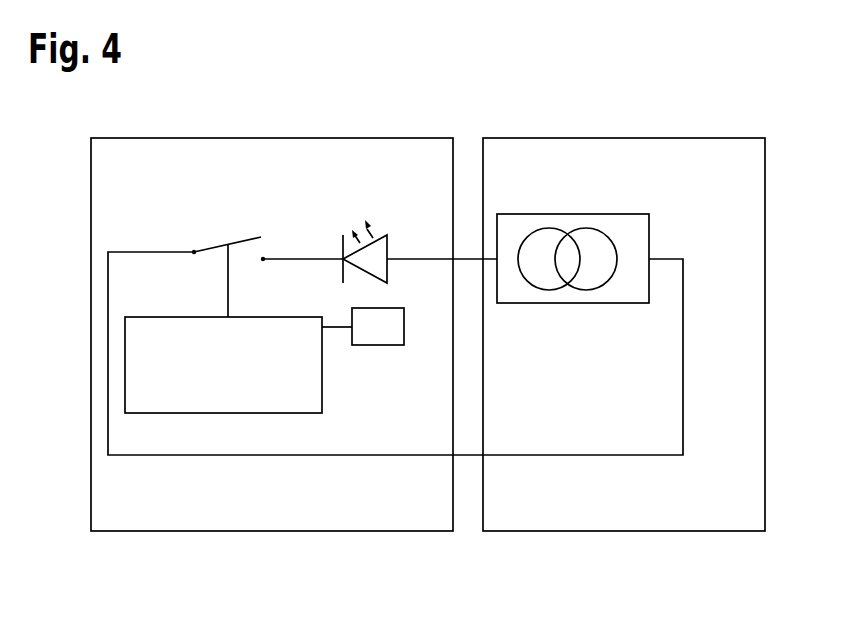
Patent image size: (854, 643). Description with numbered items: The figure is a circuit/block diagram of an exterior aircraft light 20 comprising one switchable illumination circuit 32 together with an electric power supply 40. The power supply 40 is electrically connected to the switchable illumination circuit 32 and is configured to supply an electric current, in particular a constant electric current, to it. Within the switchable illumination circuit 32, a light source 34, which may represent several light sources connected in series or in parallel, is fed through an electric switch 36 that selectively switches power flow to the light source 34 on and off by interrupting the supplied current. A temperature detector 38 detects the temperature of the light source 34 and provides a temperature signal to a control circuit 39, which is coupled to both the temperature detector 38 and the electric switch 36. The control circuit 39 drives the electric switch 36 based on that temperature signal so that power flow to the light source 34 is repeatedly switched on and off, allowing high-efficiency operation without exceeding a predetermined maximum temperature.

The exterior aircraft light 20 is at (428, 342).
The switchable illumination circuit 32 is at (443, 117).
The light source 34 is at (377, 207).
The electric switch 36 is at (241, 221).
The temperature detector 38 is at (404, 327).
The control circuit 39 is at (322, 395).
The electric power supply 40 is at (634, 197).